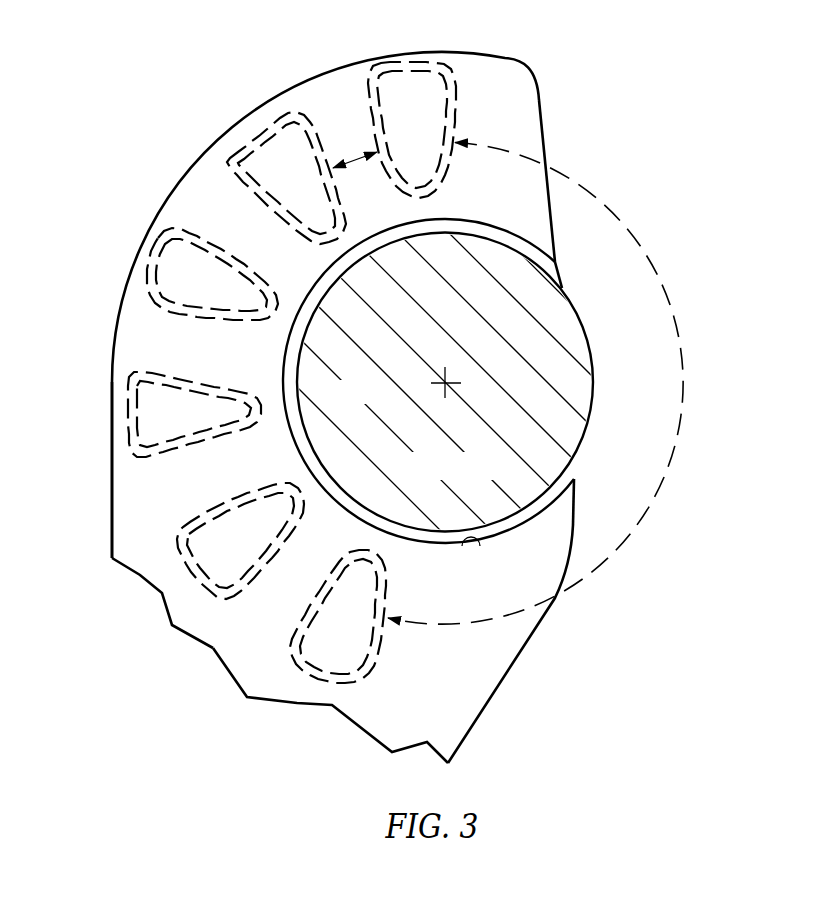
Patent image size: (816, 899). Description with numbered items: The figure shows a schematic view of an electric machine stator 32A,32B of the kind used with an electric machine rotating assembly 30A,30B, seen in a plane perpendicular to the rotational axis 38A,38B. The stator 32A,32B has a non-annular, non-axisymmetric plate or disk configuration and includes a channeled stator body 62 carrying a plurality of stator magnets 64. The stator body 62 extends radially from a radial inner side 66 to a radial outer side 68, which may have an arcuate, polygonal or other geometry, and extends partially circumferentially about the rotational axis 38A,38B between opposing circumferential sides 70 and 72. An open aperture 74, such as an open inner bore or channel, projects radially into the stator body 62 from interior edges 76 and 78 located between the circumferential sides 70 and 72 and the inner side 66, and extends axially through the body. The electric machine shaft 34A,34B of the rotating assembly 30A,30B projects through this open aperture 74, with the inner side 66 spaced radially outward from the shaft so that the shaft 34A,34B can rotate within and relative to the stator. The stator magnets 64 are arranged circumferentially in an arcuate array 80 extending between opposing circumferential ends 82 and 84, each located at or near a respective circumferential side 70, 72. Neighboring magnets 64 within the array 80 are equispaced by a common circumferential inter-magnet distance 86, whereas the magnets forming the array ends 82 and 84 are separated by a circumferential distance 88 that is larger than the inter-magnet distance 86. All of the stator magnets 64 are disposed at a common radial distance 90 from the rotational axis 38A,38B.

The electric machine rotating assembly 30A,30B is at (610, 372).
The electric machine stator 32A,32B is at (542, 75).
The electric machine shaft 34A,34B is at (587, 328).
The rotational axis 38A,38B is at (447, 386).
The stator body 62 is at (172, 583).
The stator magnets 64 is at (400, 134).
The radial inner side 66 is at (477, 542).
The radial outer side 68 is at (112, 471).
The circumferential side 70 is at (545, 149).
The circumferential side 72 is at (573, 523).
The open aperture 74 is at (558, 275).
The edge 76 is at (557, 261).
The edge 78 is at (577, 483).
The stator magnet array 80 is at (330, 102).
The circumferential end of the stator magnet array 82 is at (477, 127).
The circumferential end of the stator magnet array 84 is at (393, 647).
The circumferential inter-magnet distance 86 is at (354, 158).
The circumferential distance 88 is at (608, 553).
The radial distance 90 is at (262, 404).